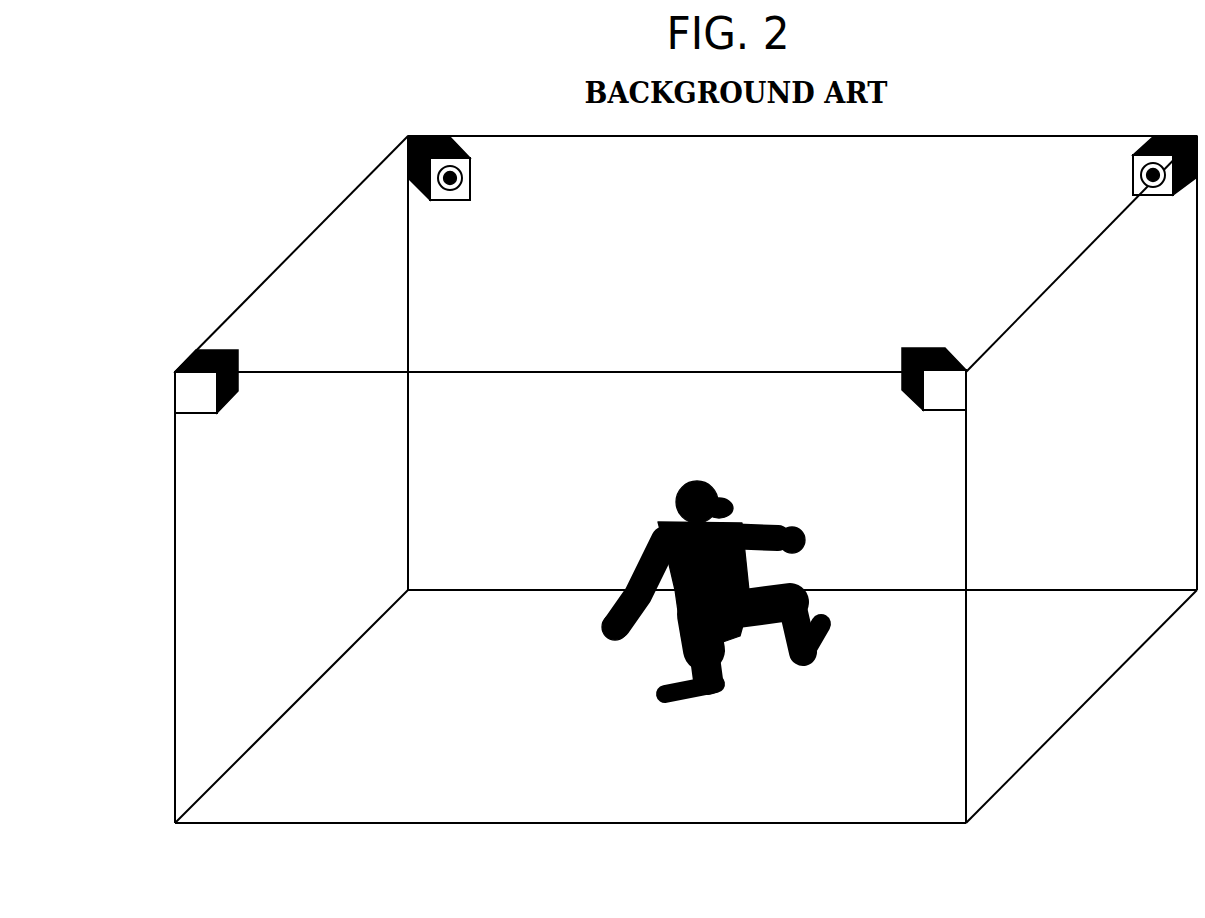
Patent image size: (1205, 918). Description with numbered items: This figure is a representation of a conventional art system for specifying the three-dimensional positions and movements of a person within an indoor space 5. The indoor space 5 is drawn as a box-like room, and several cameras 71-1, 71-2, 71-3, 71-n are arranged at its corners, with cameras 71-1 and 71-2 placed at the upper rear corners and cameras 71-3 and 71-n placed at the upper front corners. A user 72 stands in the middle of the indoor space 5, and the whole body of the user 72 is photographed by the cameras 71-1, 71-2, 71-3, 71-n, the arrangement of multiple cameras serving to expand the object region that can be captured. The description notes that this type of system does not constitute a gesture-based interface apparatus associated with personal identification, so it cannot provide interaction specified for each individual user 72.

The indoor space 5 is at (388, 823).
The camera 71-1 is at (450, 200).
The camera 71-2 is at (1147, 196).
The camera 71-3 is at (919, 346).
The camera 71-n is at (200, 414).
The user 72 is at (772, 523).